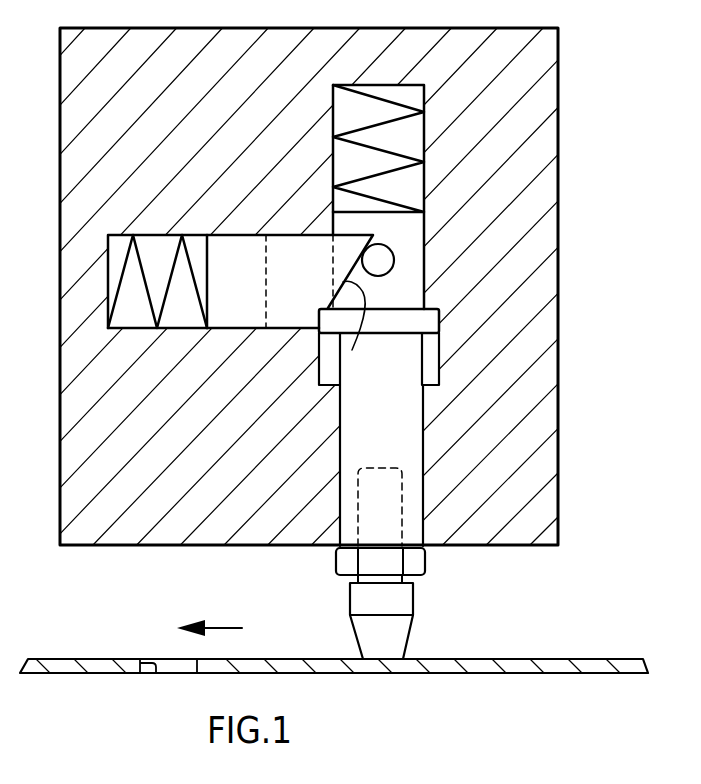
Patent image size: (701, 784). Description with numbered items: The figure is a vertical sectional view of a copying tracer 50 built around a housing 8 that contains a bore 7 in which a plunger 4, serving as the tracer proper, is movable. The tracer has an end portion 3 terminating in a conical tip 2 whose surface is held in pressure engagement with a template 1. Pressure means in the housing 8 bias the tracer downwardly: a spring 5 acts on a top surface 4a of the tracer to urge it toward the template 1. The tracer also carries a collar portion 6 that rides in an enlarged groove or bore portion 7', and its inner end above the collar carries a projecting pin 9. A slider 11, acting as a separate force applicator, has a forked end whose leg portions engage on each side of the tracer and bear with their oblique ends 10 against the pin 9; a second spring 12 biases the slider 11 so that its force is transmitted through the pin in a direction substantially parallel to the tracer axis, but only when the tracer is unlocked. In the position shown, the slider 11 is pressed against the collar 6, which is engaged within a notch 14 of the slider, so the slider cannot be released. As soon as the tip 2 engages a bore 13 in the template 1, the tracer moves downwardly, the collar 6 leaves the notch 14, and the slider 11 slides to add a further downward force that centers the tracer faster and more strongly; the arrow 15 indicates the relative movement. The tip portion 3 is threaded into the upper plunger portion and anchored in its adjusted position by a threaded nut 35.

The template 1 is at (488, 664).
The conical tip 2 is at (375, 632).
The end portion 3 is at (403, 602).
The plunger 4 is at (424, 437).
The top surface 4a is at (345, 206).
The spring 5 is at (397, 100).
The collar portion 6 is at (417, 322).
The bore 7 is at (464, 457).
The enlarged groove or bore portion 7' is at (507, 355).
The housing 8 is at (545, 497).
The pin 9 is at (390, 253).
The oblique ends 10 is at (352, 350).
The slider 11 is at (244, 292).
The spring 12 is at (120, 266).
The bore 13 is at (153, 674).
The notch 14 is at (324, 322).
The direction of motion 15 is at (220, 633).
The threaded nut 35 is at (345, 562).
The copying tracer 50 is at (566, 219).